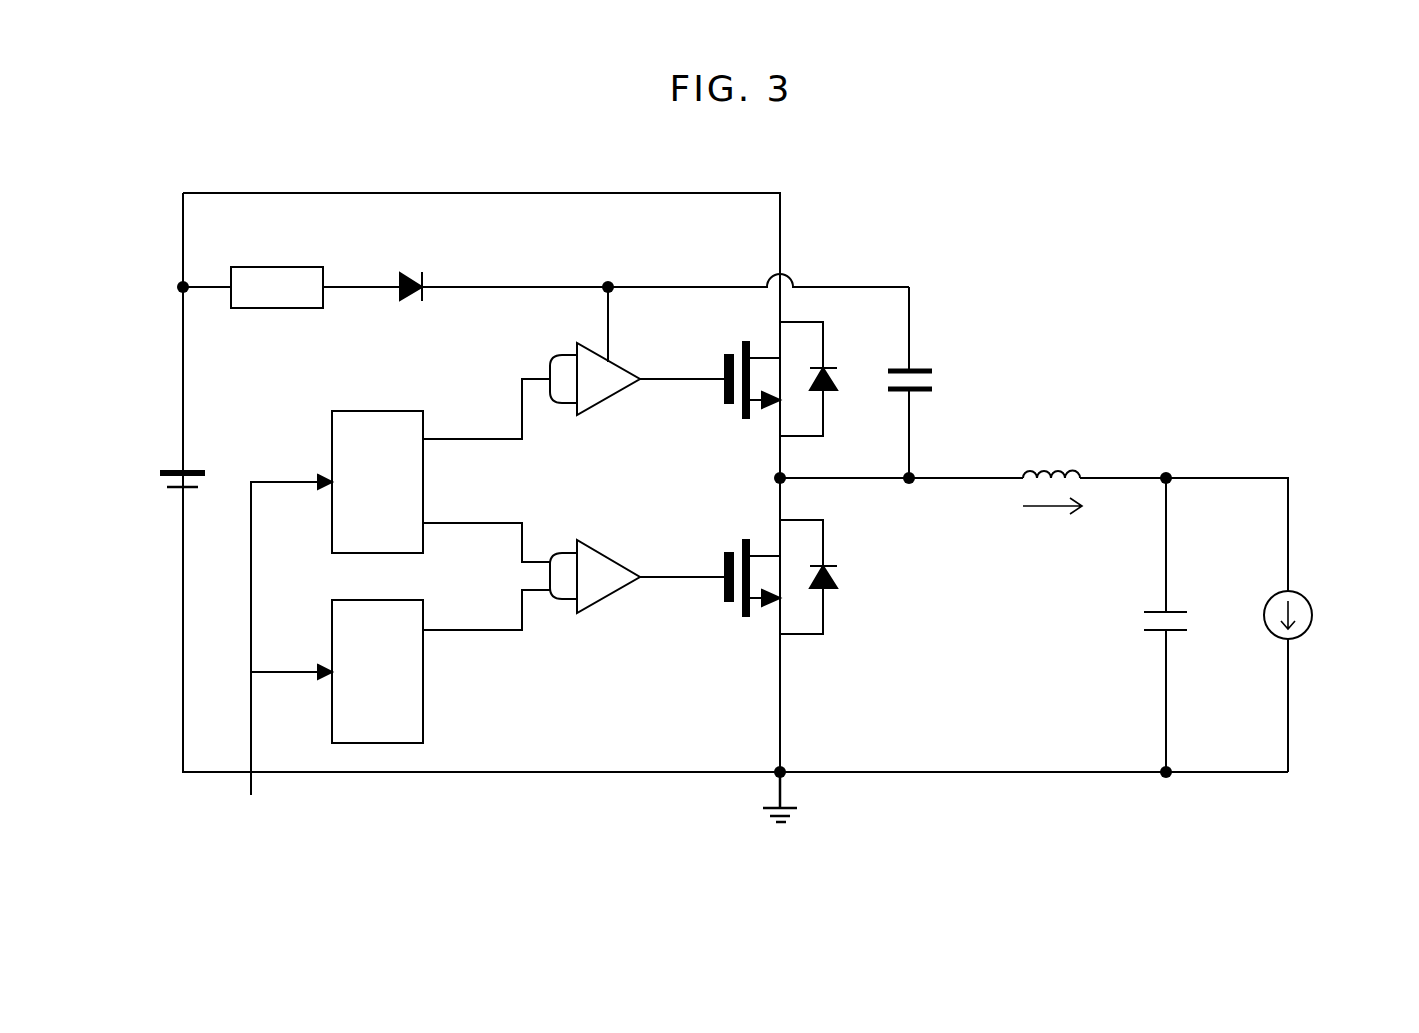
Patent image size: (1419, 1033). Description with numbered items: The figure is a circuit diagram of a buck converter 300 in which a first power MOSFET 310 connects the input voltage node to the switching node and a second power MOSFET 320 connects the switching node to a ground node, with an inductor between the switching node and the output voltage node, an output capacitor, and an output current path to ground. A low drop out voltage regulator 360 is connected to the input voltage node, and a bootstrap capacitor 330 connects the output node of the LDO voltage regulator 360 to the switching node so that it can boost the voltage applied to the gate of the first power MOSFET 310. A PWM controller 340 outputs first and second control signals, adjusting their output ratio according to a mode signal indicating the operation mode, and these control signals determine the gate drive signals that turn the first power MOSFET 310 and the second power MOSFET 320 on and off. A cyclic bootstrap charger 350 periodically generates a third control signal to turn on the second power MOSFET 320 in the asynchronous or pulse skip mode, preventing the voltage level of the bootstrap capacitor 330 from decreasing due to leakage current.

The buck converter 300 is at (1220, 200).
The first power MOSFET 310 is at (827, 333).
The second power MOSFET 320 is at (827, 531).
The bootstrap capacitor 330 is at (935, 362).
The PWM controller 340 is at (423, 423).
The cyclic bootstrap charger 350 is at (423, 612).
The LDO voltage regulator 360 is at (278, 267).